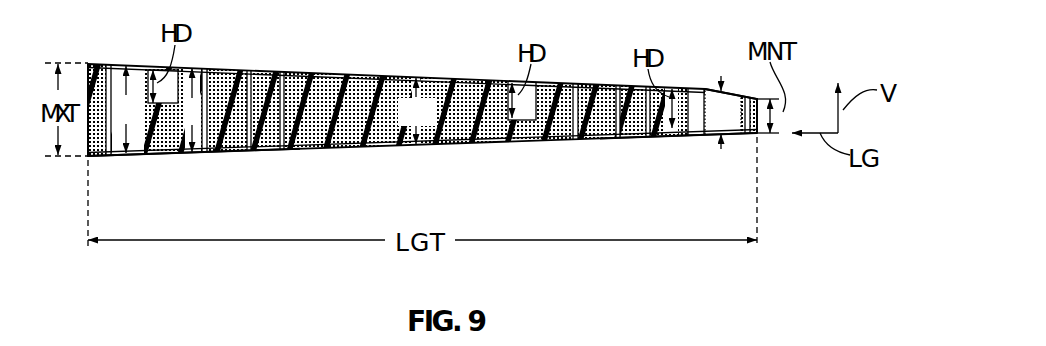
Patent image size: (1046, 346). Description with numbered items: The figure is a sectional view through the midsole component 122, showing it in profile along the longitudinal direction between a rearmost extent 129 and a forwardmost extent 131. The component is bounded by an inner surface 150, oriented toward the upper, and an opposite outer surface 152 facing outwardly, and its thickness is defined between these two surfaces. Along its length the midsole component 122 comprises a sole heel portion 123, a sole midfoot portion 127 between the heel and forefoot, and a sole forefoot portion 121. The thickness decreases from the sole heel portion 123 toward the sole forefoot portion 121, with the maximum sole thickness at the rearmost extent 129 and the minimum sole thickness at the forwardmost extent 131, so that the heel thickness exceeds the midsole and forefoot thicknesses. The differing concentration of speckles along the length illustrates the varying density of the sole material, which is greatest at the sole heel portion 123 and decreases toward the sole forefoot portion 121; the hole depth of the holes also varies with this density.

The midsole component 122 is at (437, 45).
The sole midfoot portion 127 is at (418, 148).
The inner surface 150 is at (315, 71).
The outer surface 152 is at (272, 151).
The rearmost extent 129 is at (90, 64).
The forwardmost extent 131 is at (757, 98).
The sole heel portion 123 is at (158, 159).
The sole forefoot portion 121 is at (734, 138).